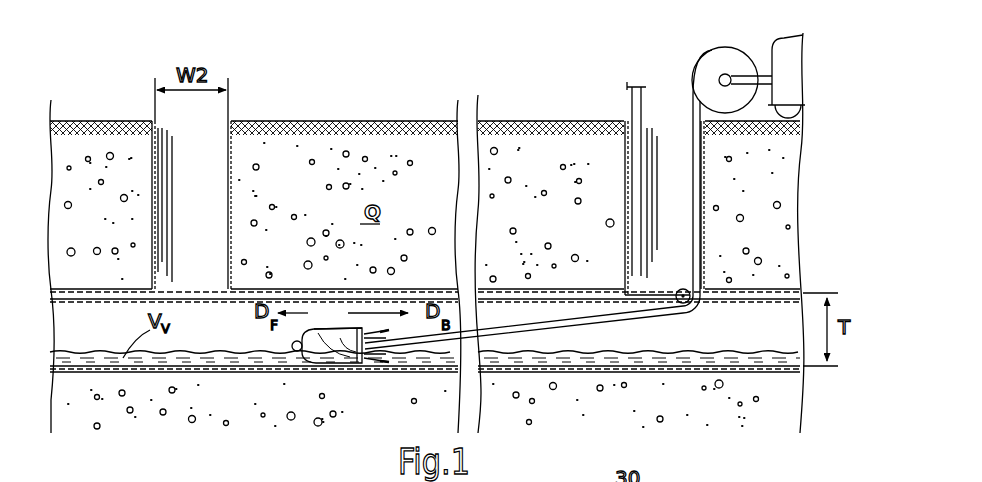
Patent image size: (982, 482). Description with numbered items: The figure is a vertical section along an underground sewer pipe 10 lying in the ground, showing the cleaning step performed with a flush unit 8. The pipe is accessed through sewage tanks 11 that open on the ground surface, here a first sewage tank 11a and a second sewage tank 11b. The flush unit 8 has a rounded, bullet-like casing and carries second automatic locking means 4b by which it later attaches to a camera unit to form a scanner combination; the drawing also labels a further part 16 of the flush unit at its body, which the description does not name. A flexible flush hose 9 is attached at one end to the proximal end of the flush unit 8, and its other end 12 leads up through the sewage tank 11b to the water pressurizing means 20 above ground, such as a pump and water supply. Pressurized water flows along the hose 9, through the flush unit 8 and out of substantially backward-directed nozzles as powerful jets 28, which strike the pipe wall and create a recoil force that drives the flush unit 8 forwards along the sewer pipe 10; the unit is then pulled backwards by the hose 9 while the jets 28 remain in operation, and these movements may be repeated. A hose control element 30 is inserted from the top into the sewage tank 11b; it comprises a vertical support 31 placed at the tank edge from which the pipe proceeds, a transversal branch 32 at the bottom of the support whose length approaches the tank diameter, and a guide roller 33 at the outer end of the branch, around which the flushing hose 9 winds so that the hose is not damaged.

The second automatic locking means 4b is at (293, 348).
The flush unit 8 is at (345, 348).
The flexible flush hose 9 is at (692, 118).
The sewer pipe 10 is at (754, 332).
The sewage tank 11 is at (357, 362).
The first sewage tank 11a is at (198, 168).
The second sewage tank 11b is at (660, 167).
The flush hose end 12 is at (724, 68).
The cleaning head 16 is at (302, 333).
The water pressurizing means 20 is at (793, 85).
The jets 28 is at (372, 332).
The hose control element 30 is at (624, 190).
The vertical support 31 is at (634, 237).
The transversal branch 32 is at (648, 308).
The guide roller 33 is at (683, 289).